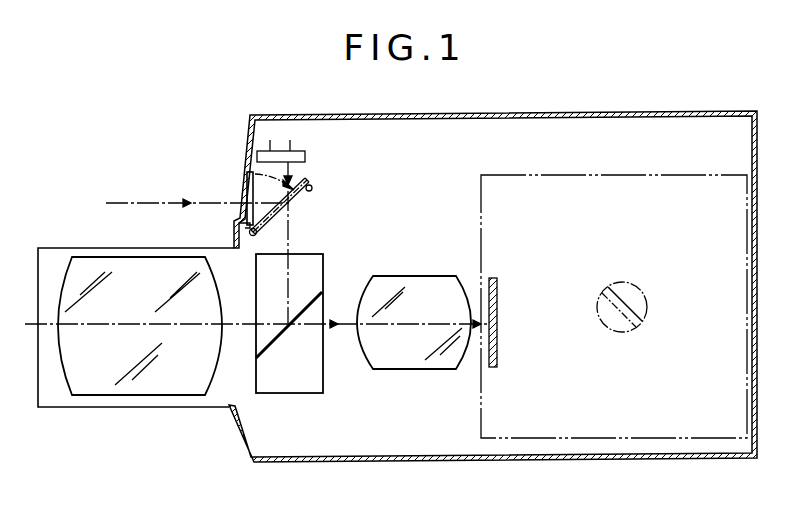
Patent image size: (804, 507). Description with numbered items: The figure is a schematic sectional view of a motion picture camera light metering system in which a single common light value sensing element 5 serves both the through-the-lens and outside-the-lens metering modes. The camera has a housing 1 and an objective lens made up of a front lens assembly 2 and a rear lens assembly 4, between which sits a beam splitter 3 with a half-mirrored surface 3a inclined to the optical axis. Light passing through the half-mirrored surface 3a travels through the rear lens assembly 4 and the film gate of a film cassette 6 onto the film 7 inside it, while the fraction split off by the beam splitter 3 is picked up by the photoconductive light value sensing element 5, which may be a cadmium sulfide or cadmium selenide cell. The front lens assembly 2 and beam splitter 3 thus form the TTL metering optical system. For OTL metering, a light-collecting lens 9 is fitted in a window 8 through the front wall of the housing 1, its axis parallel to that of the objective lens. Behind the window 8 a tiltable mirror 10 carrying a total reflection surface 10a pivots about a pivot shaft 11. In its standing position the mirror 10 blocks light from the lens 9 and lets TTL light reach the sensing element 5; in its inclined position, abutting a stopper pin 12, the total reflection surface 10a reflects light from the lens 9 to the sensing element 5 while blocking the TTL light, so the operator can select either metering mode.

The housing 1 is at (533, 115).
The front lens assembly 2 is at (140, 387).
The beam splitter 3 is at (308, 382).
The half-mirrored surface 3a is at (268, 352).
The rear lens assembly 4 is at (418, 363).
The light value sensing element 5 is at (308, 157).
The film cassette 6 is at (631, 186).
The film 7 is at (499, 301).
The window 8 is at (237, 177).
The light-collecting lens 9 is at (244, 195).
The tiltable mirror 10 is at (257, 186).
The total reflection surface 10a is at (244, 213).
The pivot shaft 11 is at (250, 238).
The stopper pin 12 is at (313, 187).